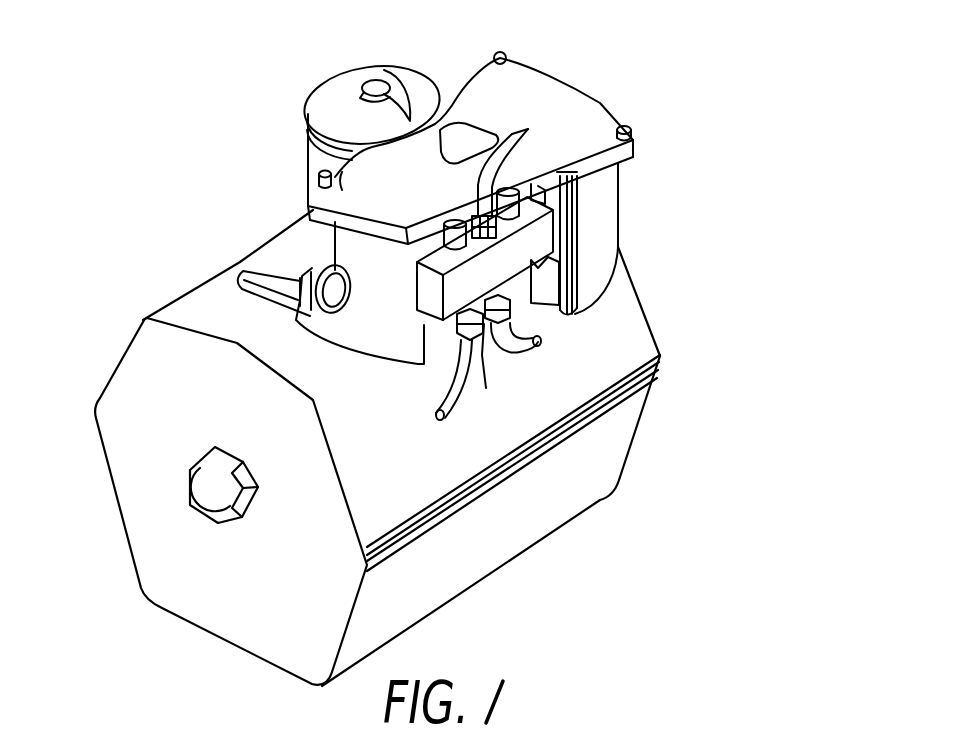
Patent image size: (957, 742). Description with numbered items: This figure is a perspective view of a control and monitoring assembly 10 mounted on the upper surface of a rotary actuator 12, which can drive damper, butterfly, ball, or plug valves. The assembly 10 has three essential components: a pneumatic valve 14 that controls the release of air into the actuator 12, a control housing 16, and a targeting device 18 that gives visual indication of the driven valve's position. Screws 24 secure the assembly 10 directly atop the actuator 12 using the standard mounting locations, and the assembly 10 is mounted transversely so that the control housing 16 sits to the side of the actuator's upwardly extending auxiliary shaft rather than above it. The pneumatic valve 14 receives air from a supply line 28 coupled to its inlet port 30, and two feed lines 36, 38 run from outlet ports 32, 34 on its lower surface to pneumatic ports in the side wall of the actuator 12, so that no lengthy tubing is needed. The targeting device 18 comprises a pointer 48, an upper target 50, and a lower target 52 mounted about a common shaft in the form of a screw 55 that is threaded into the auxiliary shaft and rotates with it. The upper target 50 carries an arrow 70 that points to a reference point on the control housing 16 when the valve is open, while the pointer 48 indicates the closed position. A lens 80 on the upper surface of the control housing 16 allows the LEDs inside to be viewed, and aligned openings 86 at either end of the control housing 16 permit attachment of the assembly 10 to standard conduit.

The control and monitoring assembly 10 is at (710, 152).
The rotary actuator 12 is at (632, 433).
The pneumatic valve 14 is at (497, 260).
The control housing 16 is at (630, 148).
The targeting device 18 is at (424, 90).
The screw 24 is at (240, 261).
The supply line 28 is at (519, 132).
The inlet port 30 is at (500, 238).
The outlet port 32 is at (487, 377).
The outlet port 34 is at (500, 316).
The feed line 36 is at (432, 418).
The feed line 38 is at (520, 353).
The pointer 48 is at (397, 78).
The upper target 50 is at (337, 132).
The lower target 52 is at (318, 186).
The screw 55 is at (390, 76).
The arrow 70 is at (314, 95).
The lens 80 is at (470, 133).
The aligned openings 86 is at (322, 316).